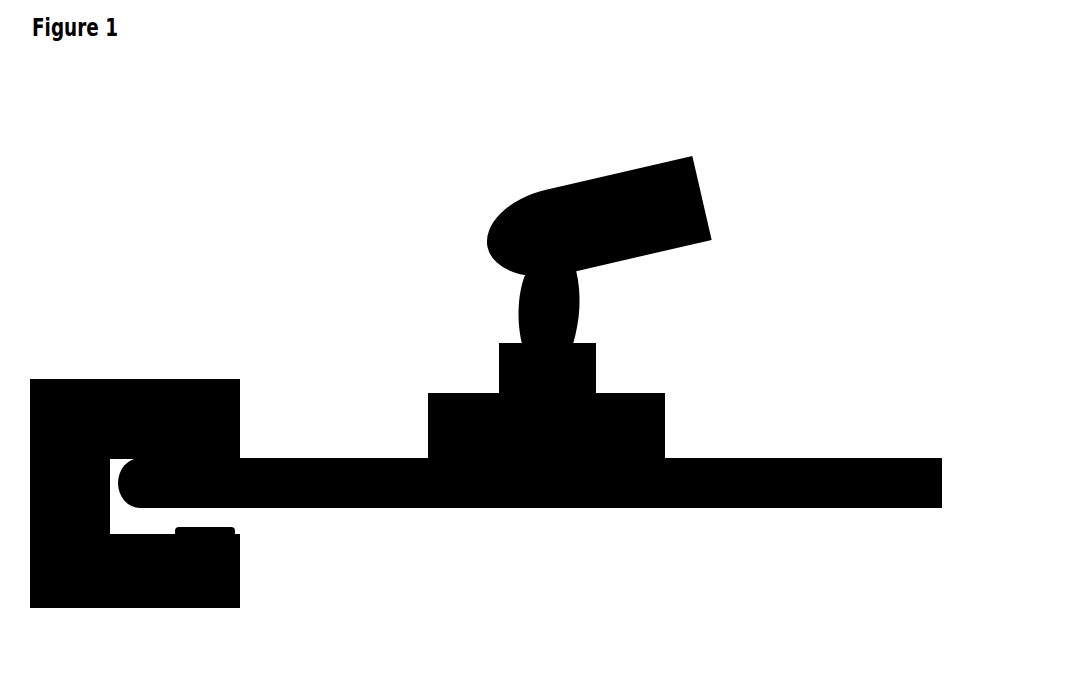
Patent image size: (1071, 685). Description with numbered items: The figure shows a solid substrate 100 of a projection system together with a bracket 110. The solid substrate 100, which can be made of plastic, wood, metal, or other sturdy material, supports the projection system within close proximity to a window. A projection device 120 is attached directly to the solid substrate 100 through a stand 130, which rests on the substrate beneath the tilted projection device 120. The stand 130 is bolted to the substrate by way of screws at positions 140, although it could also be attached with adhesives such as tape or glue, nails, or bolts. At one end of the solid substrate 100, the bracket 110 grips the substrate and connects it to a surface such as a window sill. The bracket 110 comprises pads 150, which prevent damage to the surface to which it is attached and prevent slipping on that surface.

The solid substrate 100 is at (765, 456).
The bracket 110 is at (145, 374).
The projection device 120 is at (707, 208).
The stand 130 is at (665, 398).
The positions 140 is at (622, 393).
The pads 150 is at (236, 527).